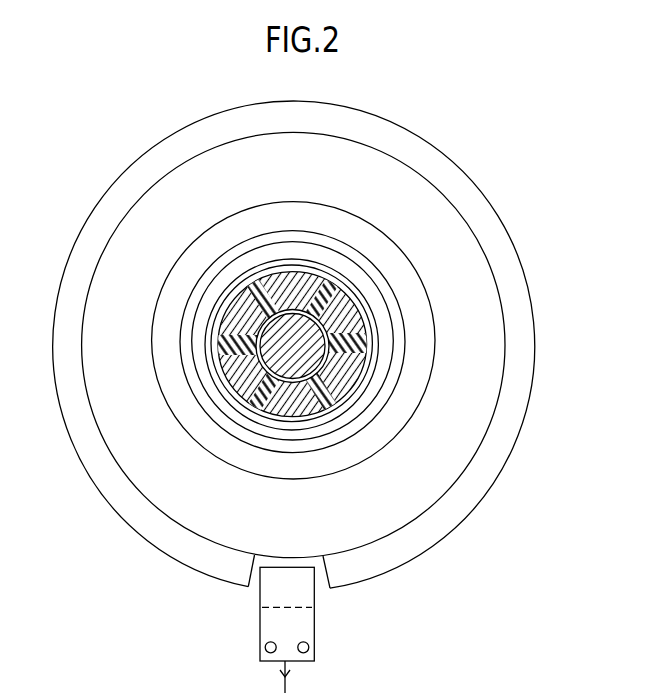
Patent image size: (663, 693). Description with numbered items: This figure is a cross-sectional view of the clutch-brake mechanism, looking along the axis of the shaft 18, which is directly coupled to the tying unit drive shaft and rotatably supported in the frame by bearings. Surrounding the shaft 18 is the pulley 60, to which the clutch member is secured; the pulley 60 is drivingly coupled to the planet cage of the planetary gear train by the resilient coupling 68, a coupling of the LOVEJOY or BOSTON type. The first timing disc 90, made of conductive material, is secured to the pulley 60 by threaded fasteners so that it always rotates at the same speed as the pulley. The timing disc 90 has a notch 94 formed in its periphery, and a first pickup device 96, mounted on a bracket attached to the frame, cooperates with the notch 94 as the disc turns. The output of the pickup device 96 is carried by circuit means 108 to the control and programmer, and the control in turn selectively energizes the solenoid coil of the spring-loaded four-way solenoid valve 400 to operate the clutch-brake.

The shaft 18 is at (312, 335).
The pulley 60 is at (298, 283).
The resilient coupling 68 is at (330, 292).
The first timing disc 90 is at (503, 460).
The notch 94 is at (294, 558).
The first pickup device 96 is at (316, 628).
The circuit means 108 is at (285, 685).
The solenoid valve 400 is at (649, 683).